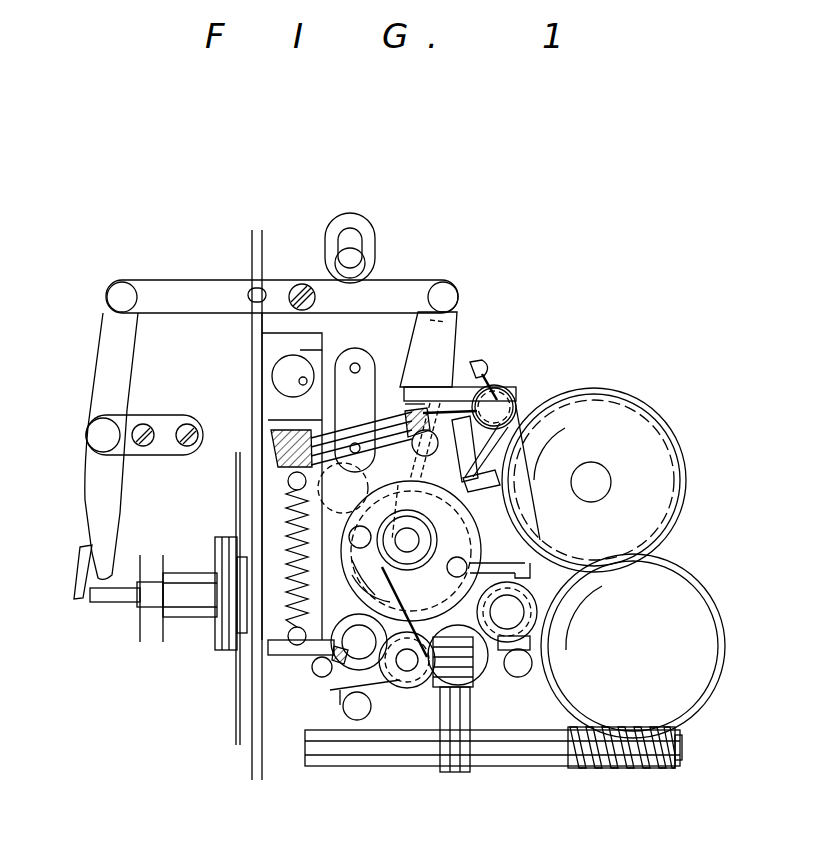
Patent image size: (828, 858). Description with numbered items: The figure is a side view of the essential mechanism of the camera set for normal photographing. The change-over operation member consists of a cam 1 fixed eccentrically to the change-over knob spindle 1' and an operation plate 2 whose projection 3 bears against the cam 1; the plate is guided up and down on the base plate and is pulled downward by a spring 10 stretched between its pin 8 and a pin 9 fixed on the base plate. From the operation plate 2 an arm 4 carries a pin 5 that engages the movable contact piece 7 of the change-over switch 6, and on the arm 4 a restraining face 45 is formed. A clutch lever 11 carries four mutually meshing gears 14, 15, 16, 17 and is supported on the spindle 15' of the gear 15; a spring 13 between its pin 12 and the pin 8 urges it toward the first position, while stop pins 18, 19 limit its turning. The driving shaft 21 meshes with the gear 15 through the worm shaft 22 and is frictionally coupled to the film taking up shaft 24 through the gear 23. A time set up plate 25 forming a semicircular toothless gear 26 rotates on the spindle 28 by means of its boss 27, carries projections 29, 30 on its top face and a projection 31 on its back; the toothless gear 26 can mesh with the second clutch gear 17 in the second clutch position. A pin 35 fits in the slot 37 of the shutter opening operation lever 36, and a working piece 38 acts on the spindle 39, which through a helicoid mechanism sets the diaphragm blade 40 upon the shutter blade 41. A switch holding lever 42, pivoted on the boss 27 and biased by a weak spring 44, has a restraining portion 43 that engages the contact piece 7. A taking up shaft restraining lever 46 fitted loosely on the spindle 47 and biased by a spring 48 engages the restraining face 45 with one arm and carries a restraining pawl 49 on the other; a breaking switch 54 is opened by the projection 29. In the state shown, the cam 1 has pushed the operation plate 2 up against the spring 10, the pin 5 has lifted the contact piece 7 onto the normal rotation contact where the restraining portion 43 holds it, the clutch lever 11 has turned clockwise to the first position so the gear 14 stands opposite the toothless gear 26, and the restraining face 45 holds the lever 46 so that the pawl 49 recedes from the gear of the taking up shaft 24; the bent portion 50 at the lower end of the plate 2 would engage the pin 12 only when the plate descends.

The cam 1 is at (271, 396).
The change-over knob spindle 1' is at (268, 382).
The operation plate 2 is at (360, 331).
The projection 3 is at (322, 311).
The arm 4 is at (408, 418).
The pin 5 is at (431, 441).
The change-over switch 6 is at (270, 440).
The movable contact piece 7 is at (355, 410).
The pin 8 is at (288, 481).
The pin 9 is at (292, 650).
The spring 10 is at (292, 538).
The clutch lever 11 is at (340, 709).
The pin 12 is at (349, 704).
The spring 13 is at (321, 663).
The gear 14 is at (366, 671).
The gear 15 is at (410, 680).
The spindle 15' is at (407, 672).
The gear 16 is at (474, 683).
The gear 17 is at (525, 625).
The stop pin 18 is at (357, 722).
The stop pin 19 is at (522, 678).
The driving shaft 21 is at (540, 766).
The worm shaft 22 is at (478, 758).
The gear 23 is at (678, 684).
The film taking up shaft 24 is at (605, 486).
The time set up plate 25 is at (497, 547).
The toothless gear 26 is at (514, 470).
The boss 27 is at (350, 575).
The spindle 28 is at (361, 588).
The projection 29 is at (450, 578).
The projection 30 is at (347, 530).
The projection 31 is at (492, 570).
The pin 35 is at (439, 442).
The shutter opening operation lever 36 is at (440, 350).
The slot 37 is at (352, 488).
The working piece 38 is at (79, 603).
The spindle 39 is at (116, 606).
The diaphragm blade 40 is at (246, 712).
The shutter blade 41 is at (234, 678).
The switch holding lever 42 is at (500, 426).
The restraining portion 43 is at (456, 390).
The weak spring 44 is at (411, 569).
The restraining face 45 is at (408, 410).
The taking up shaft restraining lever 46 is at (440, 392).
The spindle 47 is at (498, 402).
The spring 48 is at (520, 408).
The restraining pawl 49 is at (485, 487).
The bent portion 50 is at (318, 678).
The breaking switch 54 is at (536, 571).